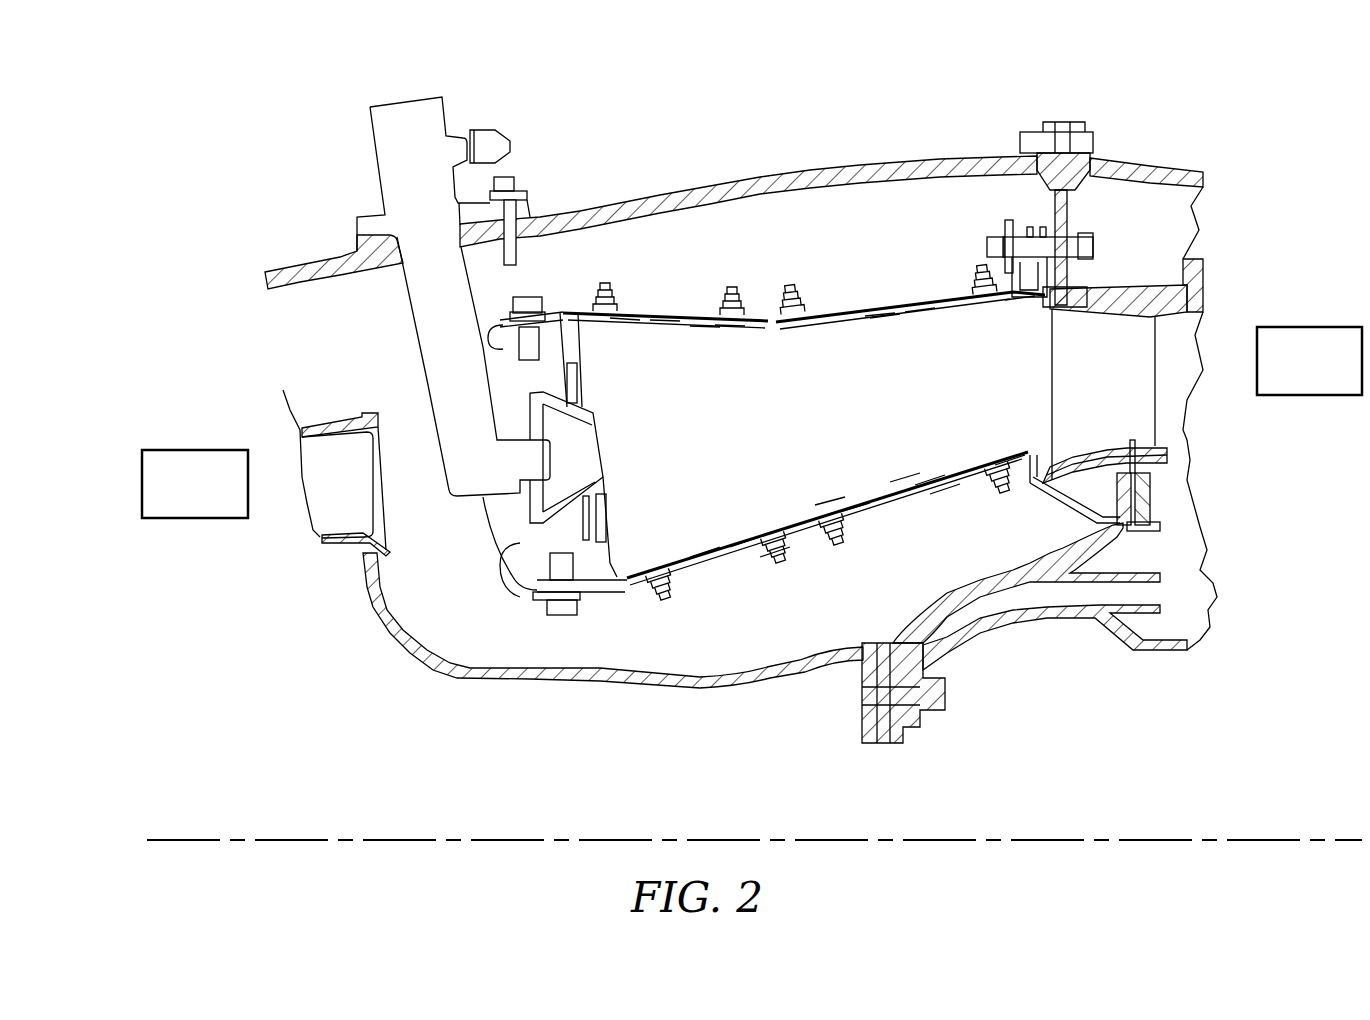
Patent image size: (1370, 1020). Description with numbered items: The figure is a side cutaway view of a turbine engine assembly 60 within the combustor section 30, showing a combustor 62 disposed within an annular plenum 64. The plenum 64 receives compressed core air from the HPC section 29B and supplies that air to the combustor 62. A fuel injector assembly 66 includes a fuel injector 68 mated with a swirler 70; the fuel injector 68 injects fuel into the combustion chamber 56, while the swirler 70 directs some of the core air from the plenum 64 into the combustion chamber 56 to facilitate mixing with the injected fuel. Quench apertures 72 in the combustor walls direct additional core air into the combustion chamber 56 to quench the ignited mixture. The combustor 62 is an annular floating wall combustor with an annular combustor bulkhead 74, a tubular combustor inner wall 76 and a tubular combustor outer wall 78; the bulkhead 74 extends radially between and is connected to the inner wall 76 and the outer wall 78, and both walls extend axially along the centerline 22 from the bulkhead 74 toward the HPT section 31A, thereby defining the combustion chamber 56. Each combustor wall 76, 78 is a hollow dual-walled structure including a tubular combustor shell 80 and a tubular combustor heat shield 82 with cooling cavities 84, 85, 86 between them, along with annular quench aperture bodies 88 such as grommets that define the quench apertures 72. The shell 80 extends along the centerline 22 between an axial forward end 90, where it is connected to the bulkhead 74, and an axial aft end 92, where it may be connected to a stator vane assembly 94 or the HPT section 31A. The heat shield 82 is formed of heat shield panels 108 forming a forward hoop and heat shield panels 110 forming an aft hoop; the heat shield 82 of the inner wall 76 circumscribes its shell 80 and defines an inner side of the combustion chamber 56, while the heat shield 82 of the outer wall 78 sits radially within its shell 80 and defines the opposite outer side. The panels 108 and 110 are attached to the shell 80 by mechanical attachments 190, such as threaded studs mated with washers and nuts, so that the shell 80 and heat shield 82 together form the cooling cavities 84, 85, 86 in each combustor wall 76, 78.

The centerline 22 is at (1128, 836).
The HPC section 29B is at (347, 484).
The combustor section 30 is at (1110, 102).
The HPT section 31A is at (1130, 363).
The combustion chamber 56 is at (800, 416).
The turbine engine assembly 60 is at (893, 140).
The combustor 62 is at (804, 428).
The annular plenum 64 is at (690, 246).
The fuel injector assembly 66 is at (448, 506).
The fuel injector 68 is at (412, 313).
The swirler 70 is at (550, 537).
The quench apertures 72 is at (848, 313).
The combustor bulkhead 74 is at (607, 507).
The combustor inner wall 76 is at (772, 568).
The combustor outer wall 78 is at (938, 290).
The combustor shell 80 is at (663, 310).
The combustor heat shield 82 is at (703, 333).
The cooling cavity 84 is at (622, 323).
The cooling cavity 85 is at (885, 323).
The cooling cavity 86 is at (1020, 312).
The quench aperture body 88 is at (880, 307).
The axial forward end 90 is at (490, 330).
The axial aft end 92 is at (1068, 290).
The stator vane assembly 94 is at (1088, 393).
The heat shield panel 108 is at (730, 328).
The heat shield panel 110 is at (922, 312).
The mechanical attachment 190 is at (598, 283).